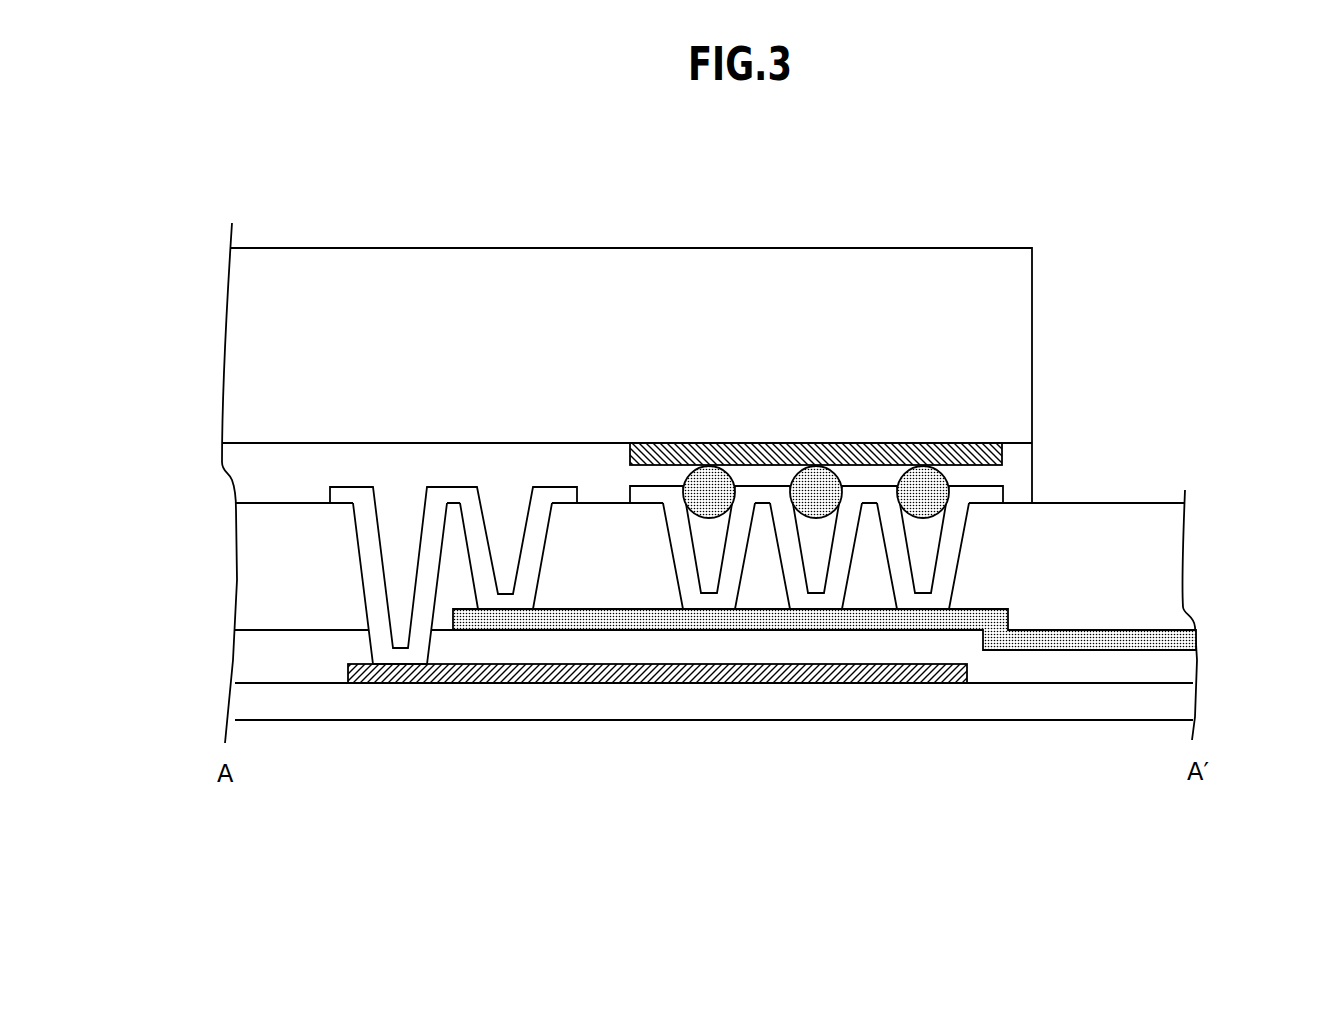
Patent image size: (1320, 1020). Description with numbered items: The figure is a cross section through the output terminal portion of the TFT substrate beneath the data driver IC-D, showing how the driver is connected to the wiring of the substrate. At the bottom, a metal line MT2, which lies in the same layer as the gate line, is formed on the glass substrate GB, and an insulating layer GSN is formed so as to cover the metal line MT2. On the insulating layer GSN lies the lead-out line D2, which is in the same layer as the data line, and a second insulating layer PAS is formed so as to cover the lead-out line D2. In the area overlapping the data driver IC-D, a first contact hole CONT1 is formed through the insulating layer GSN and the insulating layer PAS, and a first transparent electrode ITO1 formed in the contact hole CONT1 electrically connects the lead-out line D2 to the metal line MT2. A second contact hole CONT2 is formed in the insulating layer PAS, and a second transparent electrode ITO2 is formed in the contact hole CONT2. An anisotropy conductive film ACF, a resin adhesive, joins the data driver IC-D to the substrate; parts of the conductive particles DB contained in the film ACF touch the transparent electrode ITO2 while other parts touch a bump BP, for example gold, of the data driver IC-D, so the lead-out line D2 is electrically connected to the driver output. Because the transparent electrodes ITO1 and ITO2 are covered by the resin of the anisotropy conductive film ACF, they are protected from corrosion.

The data driver IC IC-D is at (1013, 305).
The conductive particles DB is at (927, 477).
The bump BP is at (982, 442).
The anisotropy conductive film ACF is at (238, 472).
The second transparent electrode ITO2 is at (990, 495).
The first transparent electrode ITO1 is at (373, 593).
The insulating layer PAS is at (248, 562).
The insulating layer GSN is at (248, 661).
The glass substrate GB is at (1183, 706).
The metal line MT2 is at (593, 685).
The lead-out line D2 is at (1038, 643).
The first contact hole CONT1 is at (507, 482).
The second contact hole CONT2 is at (917, 563).